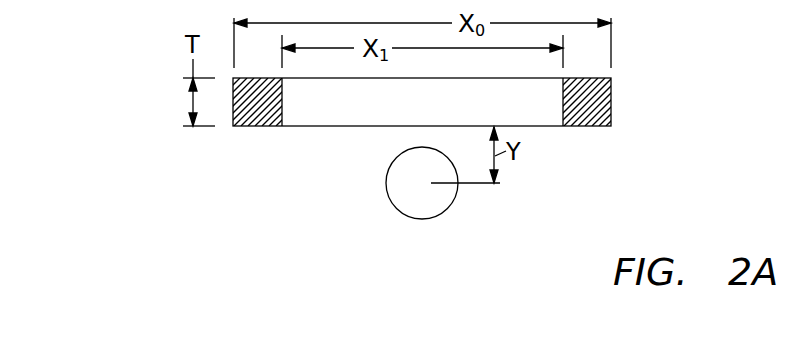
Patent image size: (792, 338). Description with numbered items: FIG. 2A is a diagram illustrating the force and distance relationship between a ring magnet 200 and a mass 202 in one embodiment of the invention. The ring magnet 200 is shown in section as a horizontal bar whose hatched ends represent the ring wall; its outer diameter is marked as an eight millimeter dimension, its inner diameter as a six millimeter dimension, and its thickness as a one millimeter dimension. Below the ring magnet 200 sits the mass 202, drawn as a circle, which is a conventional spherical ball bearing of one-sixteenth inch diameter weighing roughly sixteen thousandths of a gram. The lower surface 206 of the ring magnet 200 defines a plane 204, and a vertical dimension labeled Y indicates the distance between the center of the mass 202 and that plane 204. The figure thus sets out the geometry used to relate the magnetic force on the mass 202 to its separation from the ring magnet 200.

The ring magnet 200 is at (439, 135).
The mass 202 is at (435, 197).
The plane 204 is at (539, 128).
The lower surface 206 is at (589, 128).